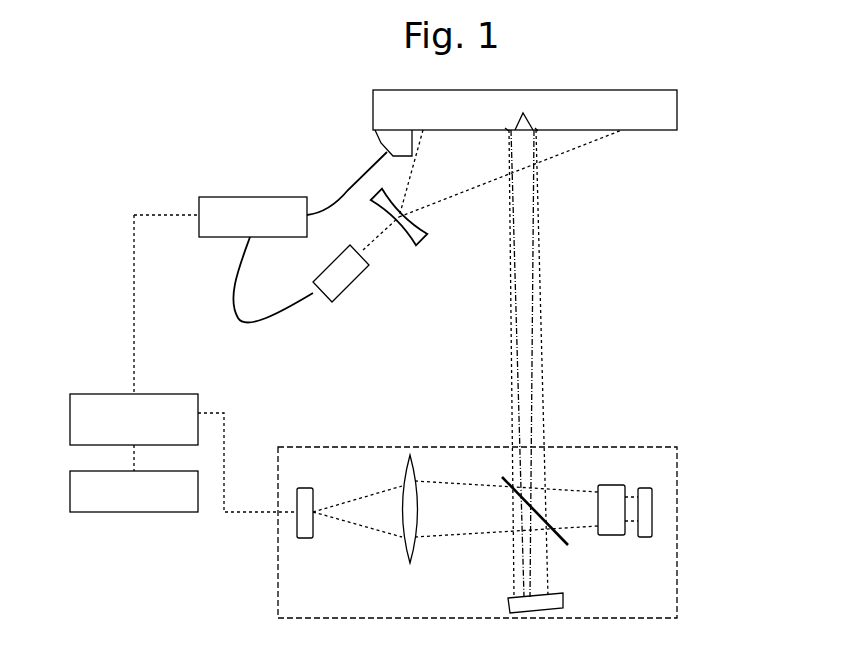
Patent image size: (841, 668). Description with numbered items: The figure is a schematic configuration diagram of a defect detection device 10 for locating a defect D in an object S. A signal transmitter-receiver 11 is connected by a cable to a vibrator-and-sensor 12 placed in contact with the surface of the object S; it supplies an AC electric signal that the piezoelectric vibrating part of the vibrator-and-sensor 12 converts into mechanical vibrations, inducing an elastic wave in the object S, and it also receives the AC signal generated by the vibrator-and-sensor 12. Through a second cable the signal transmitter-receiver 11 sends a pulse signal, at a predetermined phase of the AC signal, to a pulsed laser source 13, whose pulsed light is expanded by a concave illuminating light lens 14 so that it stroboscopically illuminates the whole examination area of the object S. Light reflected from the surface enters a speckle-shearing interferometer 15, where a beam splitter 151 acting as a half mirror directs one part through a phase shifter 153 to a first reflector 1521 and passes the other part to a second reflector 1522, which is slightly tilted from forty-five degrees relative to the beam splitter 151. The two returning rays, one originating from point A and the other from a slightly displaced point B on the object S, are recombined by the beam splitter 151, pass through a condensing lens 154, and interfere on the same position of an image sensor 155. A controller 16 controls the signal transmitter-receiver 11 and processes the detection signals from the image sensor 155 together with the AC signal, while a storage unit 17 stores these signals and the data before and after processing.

The defect detection device 10 is at (772, 580).
The signal transmitter-receiver 11 is at (233, 215).
The vibrator-and-sensor 12 is at (383, 137).
The pulsed laser source 13 is at (347, 273).
The illuminating light lens 14 is at (423, 242).
The speckle-shearing interferometer 15 is at (677, 447).
The controller 16 is at (82, 397).
The storage unit 17 is at (80, 513).
The beam splitter 151 is at (503, 478).
The phase shifter 153 is at (612, 486).
The condensing lens 154 is at (405, 455).
The image sensor 155 is at (300, 488).
The first reflector 1521 is at (653, 512).
The second reflector 1522 is at (547, 607).
The object S is at (658, 110).
The point A is at (537, 128).
The point B is at (505, 128).
The defect D is at (518, 128).